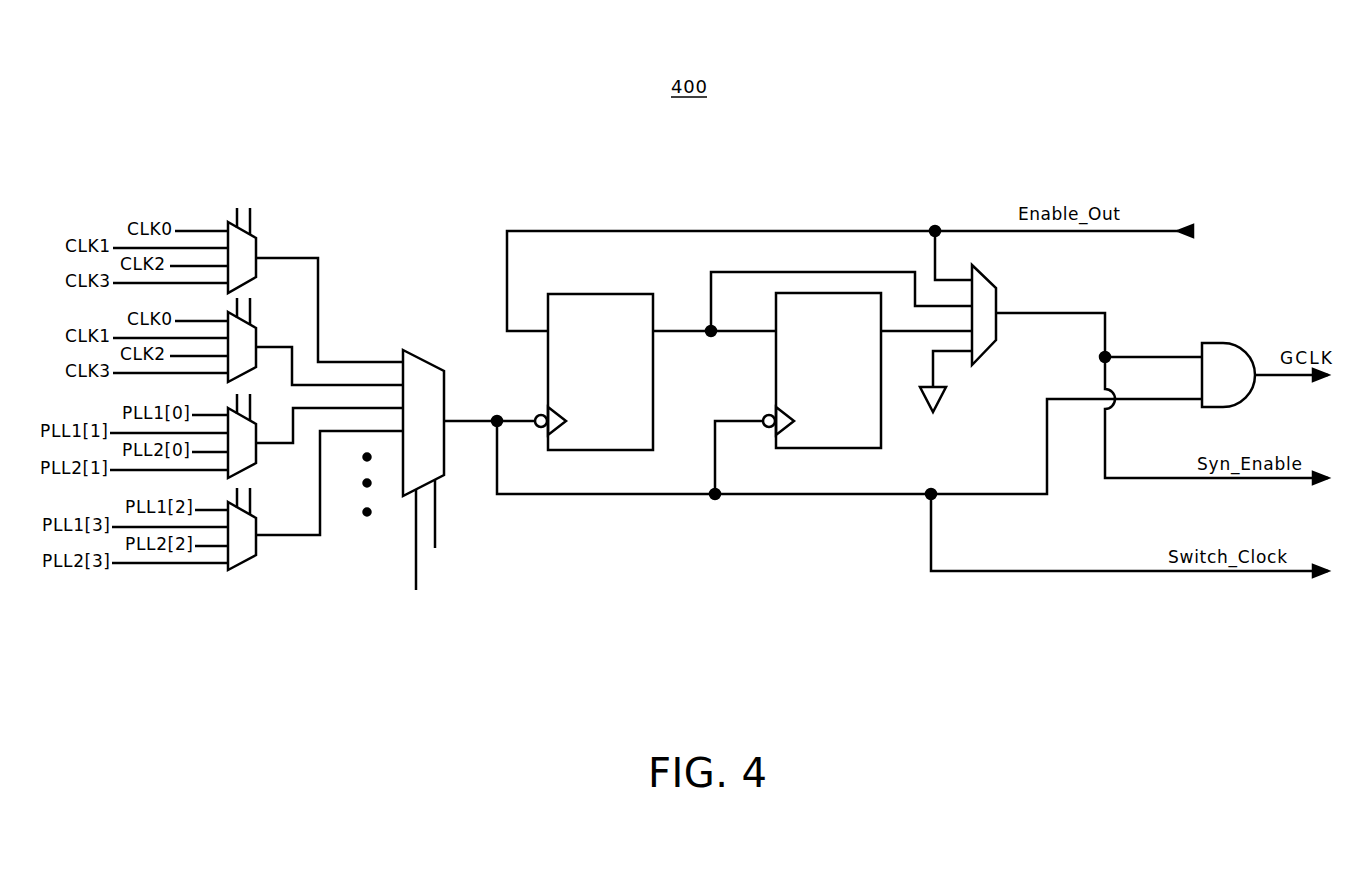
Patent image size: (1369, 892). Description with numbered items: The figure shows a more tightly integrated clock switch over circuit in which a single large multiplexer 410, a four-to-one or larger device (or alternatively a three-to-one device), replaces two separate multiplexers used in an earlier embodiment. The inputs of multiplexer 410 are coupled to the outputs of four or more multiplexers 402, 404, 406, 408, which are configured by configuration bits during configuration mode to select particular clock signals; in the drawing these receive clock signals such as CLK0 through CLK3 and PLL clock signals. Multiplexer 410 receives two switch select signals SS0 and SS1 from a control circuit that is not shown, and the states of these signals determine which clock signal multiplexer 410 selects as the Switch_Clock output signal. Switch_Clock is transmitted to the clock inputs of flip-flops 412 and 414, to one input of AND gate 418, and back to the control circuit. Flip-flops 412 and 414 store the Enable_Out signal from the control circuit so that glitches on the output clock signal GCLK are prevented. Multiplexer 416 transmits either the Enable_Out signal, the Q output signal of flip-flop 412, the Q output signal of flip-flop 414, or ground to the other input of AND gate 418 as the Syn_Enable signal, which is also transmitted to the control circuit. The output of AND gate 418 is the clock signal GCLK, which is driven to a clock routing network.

The multiplexer 402 is at (257, 248).
The multiplexer 404 is at (257, 338).
The multiplexer 406 is at (257, 455).
The multiplexer 408 is at (257, 547).
The multiplexer 410 is at (427, 352).
The flip-flop 412 is at (610, 293).
The flip-flop 414 is at (882, 409).
The multiplexer 416 is at (992, 282).
The AND gate 418 is at (1225, 343).